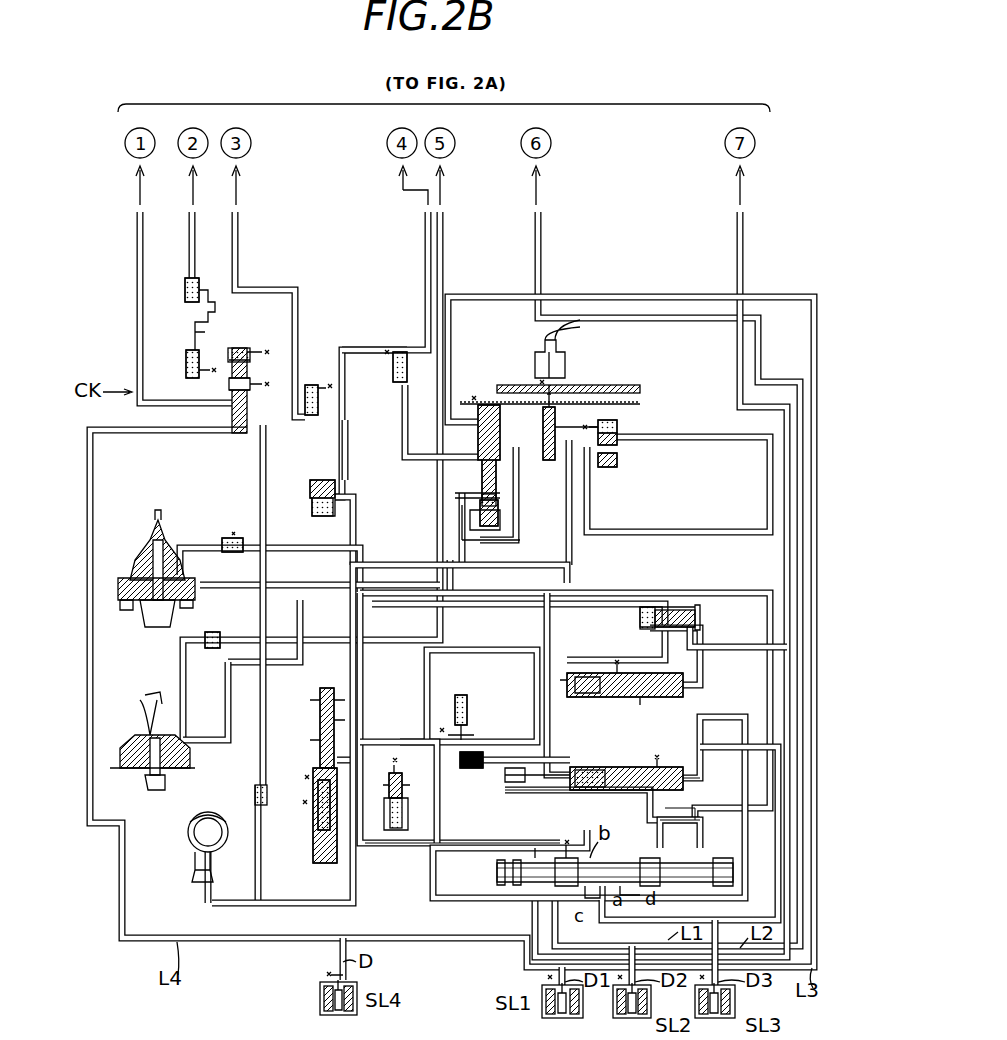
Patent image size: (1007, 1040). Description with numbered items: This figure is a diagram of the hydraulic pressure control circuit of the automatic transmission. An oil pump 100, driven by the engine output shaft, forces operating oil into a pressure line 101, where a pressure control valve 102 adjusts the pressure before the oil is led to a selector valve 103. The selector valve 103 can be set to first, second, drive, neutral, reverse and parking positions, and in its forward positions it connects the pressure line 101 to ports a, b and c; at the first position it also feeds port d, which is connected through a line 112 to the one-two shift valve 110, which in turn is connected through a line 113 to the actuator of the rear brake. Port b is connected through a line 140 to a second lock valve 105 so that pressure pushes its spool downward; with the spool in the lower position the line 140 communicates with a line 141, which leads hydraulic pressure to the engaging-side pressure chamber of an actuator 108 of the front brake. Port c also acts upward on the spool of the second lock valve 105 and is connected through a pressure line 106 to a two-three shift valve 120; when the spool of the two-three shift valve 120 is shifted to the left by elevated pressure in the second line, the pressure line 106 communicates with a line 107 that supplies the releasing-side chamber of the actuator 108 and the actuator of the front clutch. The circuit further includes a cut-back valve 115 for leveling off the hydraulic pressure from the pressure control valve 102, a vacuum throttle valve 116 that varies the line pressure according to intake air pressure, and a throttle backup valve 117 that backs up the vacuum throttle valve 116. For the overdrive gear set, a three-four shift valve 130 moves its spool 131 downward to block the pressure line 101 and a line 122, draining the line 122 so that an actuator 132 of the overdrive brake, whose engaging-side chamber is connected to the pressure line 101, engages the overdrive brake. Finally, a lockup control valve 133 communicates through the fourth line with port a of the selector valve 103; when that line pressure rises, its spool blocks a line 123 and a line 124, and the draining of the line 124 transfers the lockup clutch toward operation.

The oil pump 100 is at (200, 842).
The pressure line 101 is at (417, 564).
The pressure control valve 102 is at (309, 832).
The selector valve 103 is at (547, 855).
The second lock valve 105 is at (405, 765).
The pressure line 106 is at (478, 766).
The line 107 is at (538, 790).
The actuator of the front brake 108 is at (137, 780).
The 1-2 shift valve 110 is at (618, 700).
The line 112 is at (750, 852).
The line 113 is at (705, 738).
The cut-back valve 115 is at (686, 599).
The vacuum throttle valve 116 is at (566, 402).
The throttle backup valve 117 is at (640, 427).
The 2-3 shift valve 120 is at (631, 754).
The line 122 is at (422, 455).
The line 123 is at (264, 598).
The line 124 is at (138, 337).
The 3-4 shift valve 130 is at (470, 400).
The spool 131 is at (492, 465).
The actuator of the overdrive brake 132 is at (148, 626).
The lockup control valve 133 is at (255, 341).
The line 140 is at (465, 838).
The line 141 is at (380, 730).